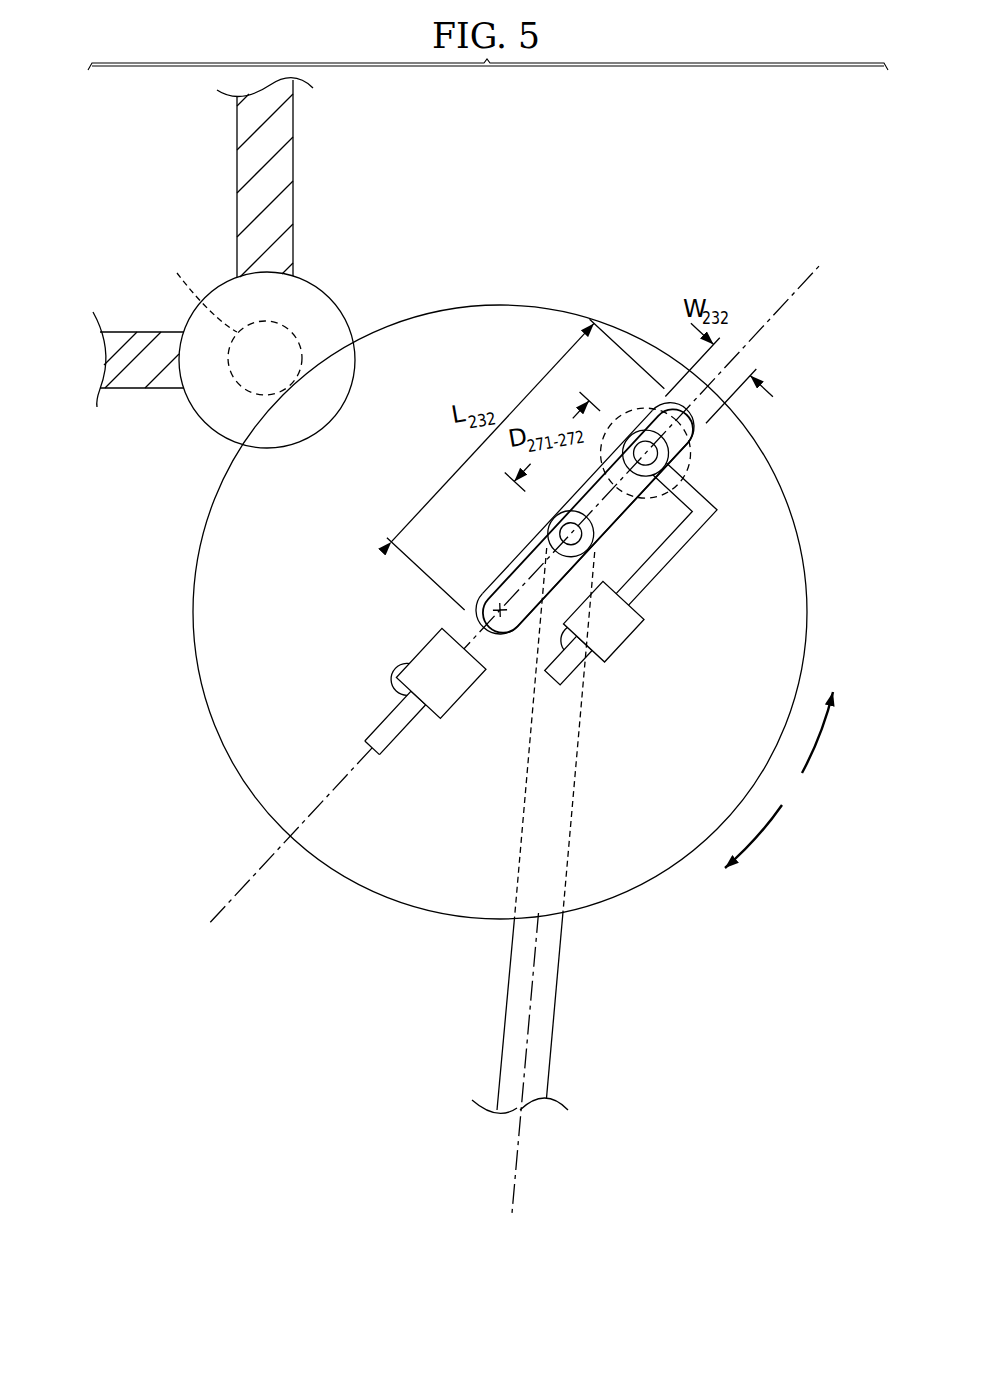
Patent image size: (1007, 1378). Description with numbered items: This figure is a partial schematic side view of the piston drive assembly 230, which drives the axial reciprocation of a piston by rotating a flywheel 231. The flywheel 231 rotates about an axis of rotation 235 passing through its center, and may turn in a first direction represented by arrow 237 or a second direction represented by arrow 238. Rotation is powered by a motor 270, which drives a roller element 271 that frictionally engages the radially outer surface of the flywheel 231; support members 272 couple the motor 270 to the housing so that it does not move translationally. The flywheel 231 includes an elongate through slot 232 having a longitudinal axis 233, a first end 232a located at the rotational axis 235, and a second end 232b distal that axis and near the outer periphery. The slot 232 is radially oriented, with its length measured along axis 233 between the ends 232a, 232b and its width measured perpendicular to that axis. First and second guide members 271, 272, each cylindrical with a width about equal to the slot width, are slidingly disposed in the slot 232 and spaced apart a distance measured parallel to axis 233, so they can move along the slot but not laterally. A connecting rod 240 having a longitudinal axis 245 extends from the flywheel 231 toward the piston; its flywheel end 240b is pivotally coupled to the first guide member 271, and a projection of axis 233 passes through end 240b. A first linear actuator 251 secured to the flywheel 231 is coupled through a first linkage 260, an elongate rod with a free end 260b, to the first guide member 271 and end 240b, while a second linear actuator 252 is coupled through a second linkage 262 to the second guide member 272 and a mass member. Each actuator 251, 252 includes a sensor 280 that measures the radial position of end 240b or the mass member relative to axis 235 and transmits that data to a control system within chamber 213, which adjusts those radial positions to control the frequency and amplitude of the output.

The chamber 213 is at (518, 173).
The piston drive assembly 230 is at (500, 556).
The flywheel 231 is at (498, 305).
The elongate through slot 232 is at (510, 556).
The first end 232a is at (493, 633).
The second end 232b is at (692, 414).
The longitudinal axis 233 is at (240, 890).
The axis of rotation 235 is at (483, 581).
The arrow 237 is at (820, 742).
The arrow 238 is at (763, 825).
The connecting rod 240 is at (500, 1043).
The flywheel end 240b is at (698, 533).
The longitudinal axis 245 is at (533, 1003).
The first linear actuator 251 is at (421, 650).
The second linear actuator 252 is at (627, 642).
The first linkage 260 is at (407, 732).
The bar end 260b is at (363, 745).
The second linkage 262 is at (648, 593).
The motor 270 is at (329, 298).
The first guide member 271 is at (679, 572).
The second guide member 272 is at (237, 170).
The sensor 280 is at (393, 689).